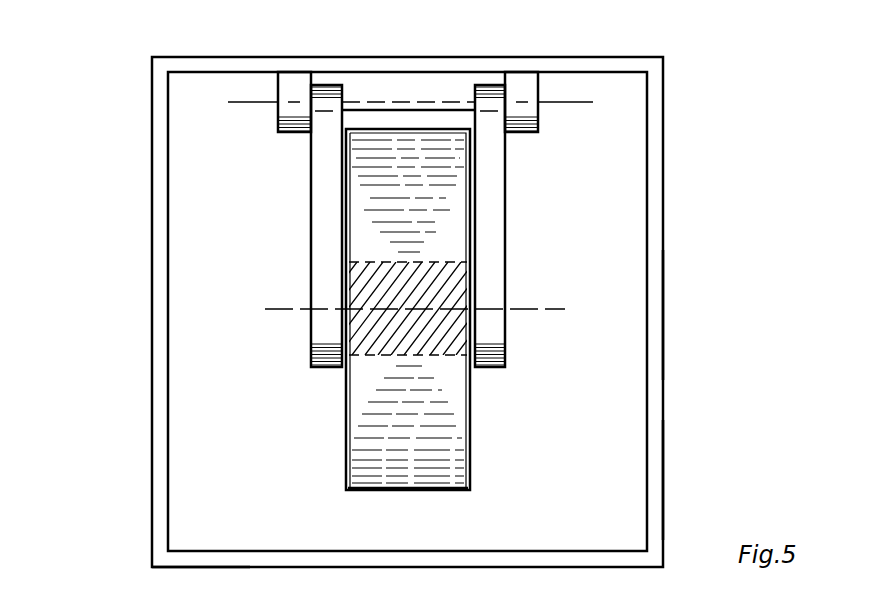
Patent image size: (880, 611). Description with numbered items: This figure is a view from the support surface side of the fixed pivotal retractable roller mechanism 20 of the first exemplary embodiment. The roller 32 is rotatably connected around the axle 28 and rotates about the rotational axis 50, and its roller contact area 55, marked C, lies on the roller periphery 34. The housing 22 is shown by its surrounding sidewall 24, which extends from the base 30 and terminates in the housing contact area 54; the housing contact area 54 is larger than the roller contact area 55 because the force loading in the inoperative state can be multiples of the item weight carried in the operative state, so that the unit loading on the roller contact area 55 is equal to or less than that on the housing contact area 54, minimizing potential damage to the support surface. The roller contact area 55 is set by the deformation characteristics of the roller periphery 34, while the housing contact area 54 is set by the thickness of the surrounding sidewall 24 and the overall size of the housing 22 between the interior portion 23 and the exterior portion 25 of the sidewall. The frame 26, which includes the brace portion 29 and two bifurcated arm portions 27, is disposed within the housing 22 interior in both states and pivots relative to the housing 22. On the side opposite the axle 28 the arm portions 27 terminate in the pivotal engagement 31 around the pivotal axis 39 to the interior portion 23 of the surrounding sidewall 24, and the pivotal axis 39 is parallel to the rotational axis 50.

The fixed pivotal retractable roller mechanism 20 is at (130, 63).
The housing 22 is at (663, 57).
The interior portion of the surrounding sidewall 23 is at (646, 215).
The surrounding sidewall 24 is at (664, 317).
The exterior portion of the surrounding sidewall 25 is at (664, 479).
The frame 26 is at (312, 347).
The bifurcated arm portions 27 is at (311, 237).
The axle 28 is at (470, 300).
The brace portion 29 is at (397, 110).
The base 30 is at (203, 180).
The pivotal engagement 31 is at (305, 103).
The roller 32 is at (380, 467).
The roller periphery 34 is at (412, 490).
The pivotal axis 39 is at (573, 102).
The rotational axis 50 is at (527, 309).
The housing contact area 54 is at (170, 560).
The roller contact area 55 is at (455, 272).